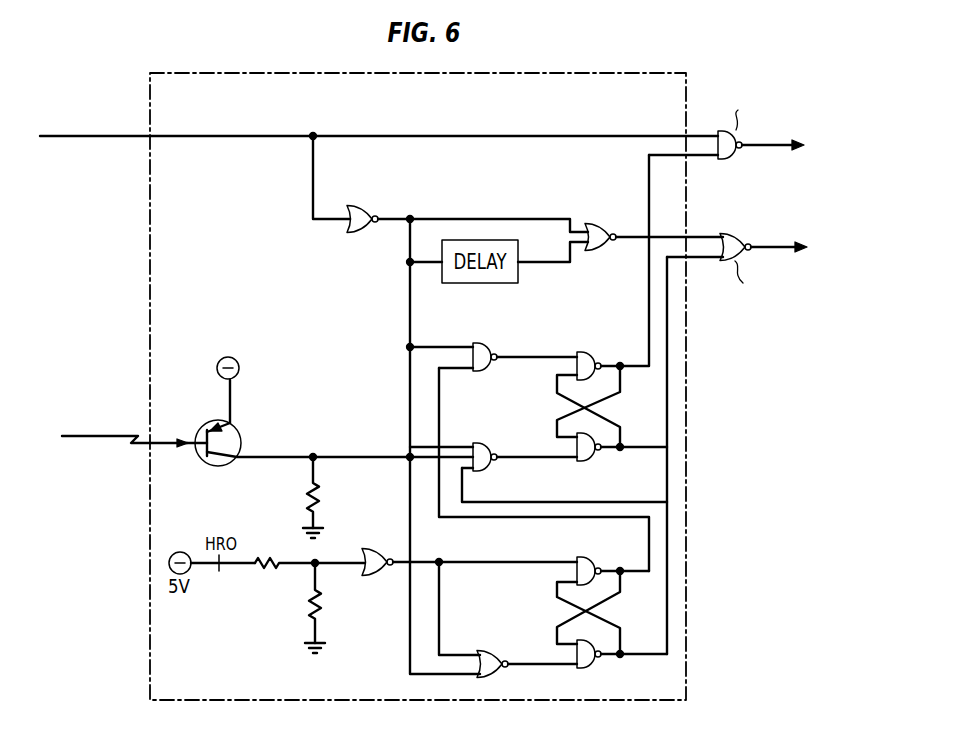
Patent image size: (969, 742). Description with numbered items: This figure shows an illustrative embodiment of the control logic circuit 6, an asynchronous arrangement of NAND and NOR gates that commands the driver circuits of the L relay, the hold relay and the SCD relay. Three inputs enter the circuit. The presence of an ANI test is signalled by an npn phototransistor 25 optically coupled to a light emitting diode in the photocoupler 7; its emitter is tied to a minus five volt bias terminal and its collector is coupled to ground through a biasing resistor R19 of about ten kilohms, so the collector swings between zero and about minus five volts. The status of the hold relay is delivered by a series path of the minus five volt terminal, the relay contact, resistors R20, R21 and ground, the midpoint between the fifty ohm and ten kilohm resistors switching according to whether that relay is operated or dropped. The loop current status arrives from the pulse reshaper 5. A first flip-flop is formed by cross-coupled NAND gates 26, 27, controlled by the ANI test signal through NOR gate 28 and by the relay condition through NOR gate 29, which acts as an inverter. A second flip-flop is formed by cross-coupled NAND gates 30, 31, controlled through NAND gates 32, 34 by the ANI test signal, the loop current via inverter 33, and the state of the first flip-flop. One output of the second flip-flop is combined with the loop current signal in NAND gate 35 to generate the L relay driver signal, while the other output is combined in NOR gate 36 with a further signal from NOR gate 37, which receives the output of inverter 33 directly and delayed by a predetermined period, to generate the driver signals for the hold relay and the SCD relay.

The pulse reshaper 5 is at (72, 133).
The control logic circuit 6 is at (510, 106).
The photocoupler 7 is at (140, 433).
The phototransistor 25 is at (330, 411).
The NAND gate 26 is at (612, 637).
The NAND gate 27 is at (603, 589).
The NOR gate 28 is at (508, 620).
The NOR gate 29 is at (469, 554).
The NAND gate 30 is at (612, 429).
The NAND gate 31 is at (603, 296).
The NAND gate 32 is at (493, 446).
The inverter 33 is at (450, 184).
The NAND gate 34 is at (492, 346).
The NAND gate 35 is at (726, 126).
The NOR gate 36 is at (737, 279).
The NOR gate 37 is at (654, 228).
The biasing resistor R19 is at (326, 497).
The resistor R20 is at (309, 576).
The resistor R21 is at (328, 608).